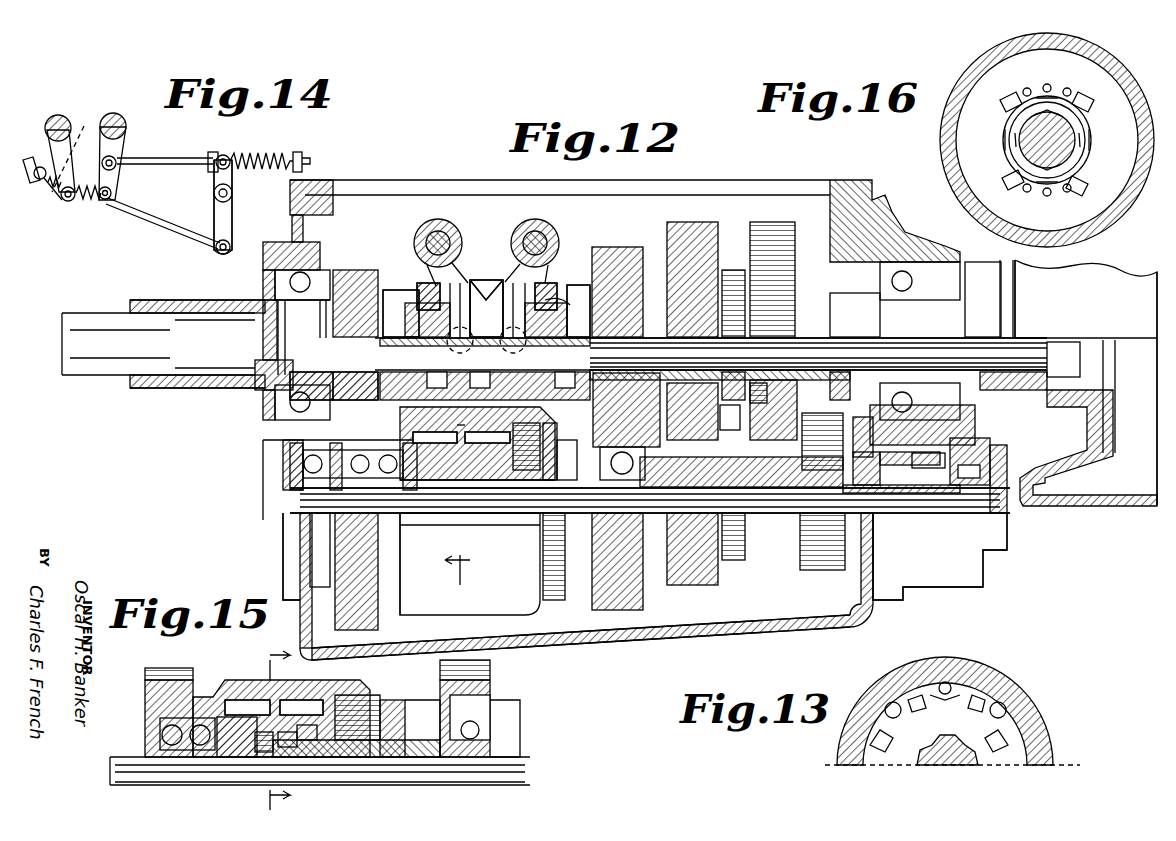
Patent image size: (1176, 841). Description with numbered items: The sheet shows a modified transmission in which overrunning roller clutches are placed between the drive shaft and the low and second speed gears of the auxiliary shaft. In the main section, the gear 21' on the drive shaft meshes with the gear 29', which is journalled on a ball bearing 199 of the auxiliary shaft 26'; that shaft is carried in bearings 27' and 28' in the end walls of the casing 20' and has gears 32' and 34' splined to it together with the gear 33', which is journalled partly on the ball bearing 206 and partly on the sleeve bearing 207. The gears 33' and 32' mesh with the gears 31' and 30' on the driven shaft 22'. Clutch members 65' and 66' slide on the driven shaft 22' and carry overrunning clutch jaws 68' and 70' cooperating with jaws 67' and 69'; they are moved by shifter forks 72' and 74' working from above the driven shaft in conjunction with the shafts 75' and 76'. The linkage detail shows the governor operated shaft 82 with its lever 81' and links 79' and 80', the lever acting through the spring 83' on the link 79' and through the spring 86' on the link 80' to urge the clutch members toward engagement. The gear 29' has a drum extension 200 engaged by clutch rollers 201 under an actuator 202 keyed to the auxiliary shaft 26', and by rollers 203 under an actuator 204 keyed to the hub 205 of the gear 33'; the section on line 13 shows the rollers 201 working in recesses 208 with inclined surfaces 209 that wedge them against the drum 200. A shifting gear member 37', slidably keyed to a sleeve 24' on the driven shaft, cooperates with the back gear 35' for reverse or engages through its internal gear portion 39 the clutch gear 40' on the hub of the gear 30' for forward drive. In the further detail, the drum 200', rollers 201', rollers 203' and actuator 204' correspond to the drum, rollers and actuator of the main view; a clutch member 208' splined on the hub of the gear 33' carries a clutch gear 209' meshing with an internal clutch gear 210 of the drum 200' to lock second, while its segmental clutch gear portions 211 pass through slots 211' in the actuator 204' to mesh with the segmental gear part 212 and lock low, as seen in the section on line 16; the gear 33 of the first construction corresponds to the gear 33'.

In FIG. 12, the shaft 76' is at (438, 209).
In FIG. 14, the shaft 76' is at (43, 113).
In FIG. 12, the shaft 75' is at (535, 212).
In FIG. 14, the shaft 75' is at (113, 111).
In FIG. 12, the clutch member 66' is at (486, 256).
In FIG. 12, the shifter fork 74' is at (410, 267).
In FIG. 12, the clutch jaws 69' is at (399, 297).
In FIG. 12, the gear 21' is at (354, 315).
In FIG. 12, the shifter fork 72' is at (563, 262).
In FIG. 14, the shifter fork 72' is at (129, 161).
In FIG. 12, the clutch member 65' is at (497, 296).
In FIG. 12, the clutch jaws 67' is at (577, 292).
In FIG. 12, the clutch jaws 68' is at (568, 312).
In FIG. 12, the gear 31' is at (617, 271).
In FIG. 12, the gear 30' is at (706, 295).
In FIG. 12, the shifting gear member 37' is at (779, 243).
In FIG. 12, the driven shaft 22' is at (1065, 382).
In FIG. 12, the sleeve 24' is at (818, 348).
In FIG. 12, the clutch jaws 70' is at (346, 394).
In FIG. 12, the internal clutch gear 209 is at (541, 432).
In FIG. 13, the internal clutch gear 209 is at (930, 715).
In FIG. 12, the ball bearing 206 is at (615, 447).
In FIG. 15, the ball bearing 206 is at (500, 722).
In FIG. 12, the sleeve bearing 207 is at (574, 455).
In FIG. 12, the clutch gear 40' is at (732, 417).
In FIG. 12, the annular internal gear portion 39 is at (760, 420).
In FIG. 12, the back gear 35' is at (826, 430).
In FIG. 12, the gear 34' is at (805, 515).
In FIG. 12, the gear 32' is at (668, 561).
In FIG. 12, the gear 33' is at (581, 639).
In FIG. 12, the clutch gear 208 is at (581, 639).
In FIG. 13, the clutch gear 208 is at (949, 731).
In FIG. 12, the drum extension 200 is at (477, 524).
In FIG. 13, the drum extension 200 is at (945, 701).
In FIG. 12, the gear 29' is at (376, 577).
In FIG. 15, the gear 29' is at (153, 703).
In FIG. 12, the auxiliary shaft 26' is at (415, 564).
In FIG. 12, the section line 13 is at (457, 570).
In FIG. 12, the clutch rollers 201 is at (435, 482).
In FIG. 13, the clutch rollers 201 is at (959, 659).
In FIG. 12, the actuator 202 is at (487, 482).
In FIG. 13, the actuator 202 is at (974, 723).
In FIG. 12, the actuator 204 is at (477, 506).
In FIG. 12, the clutch rollers 203 is at (479, 489).
In FIG. 12, the hub 205 is at (535, 500).
In FIG. 12, the ball bearing 199 is at (650, 500).
In FIG. 15, the ball bearing 199 is at (165, 735).
In FIG. 12, the bearing 27' is at (268, 465).
In FIG. 12, the casing 20' is at (273, 556).
In FIG. 12, the bearing 28' is at (940, 545).
In FIG. 14, the link 79' is at (167, 171).
In FIG. 14, the spring 83' is at (270, 146).
In FIG. 14, the governor operated shaft 82 is at (233, 190).
In FIG. 14, the lever 81' is at (238, 207).
In FIG. 14, the link 80' is at (163, 223).
In FIG. 14, the spring 86' is at (62, 197).
In FIG. 16, the drum 200' is at (1047, 138).
In FIG. 15, the drum 200' is at (281, 707).
In FIG. 16, the actuator 204' is at (992, 140).
In FIG. 15, the actuator 204' is at (356, 772).
In FIG. 16, the segmental clutch gear portions 211 is at (1039, 141).
In FIG. 15, the segmental clutch gear portions 211 is at (348, 765).
In FIG. 16, the slots 211' is at (1049, 136).
In FIG. 15, the slots 211' is at (303, 768).
In FIG. 15, the rollers 201' is at (236, 678).
In FIG. 15, the rollers 203' is at (301, 683).
In FIG. 15, the section line 16 is at (267, 725).
In FIG. 15, the internal clutch gear 210 is at (355, 695).
In FIG. 15, the clutch gear 209' is at (404, 715).
In FIG. 15, the clutch member 208' is at (412, 722).
In FIG. 15, the gear 33 is at (465, 672).
In FIG. 15, the internal segmental clutch gear part 212 is at (258, 745).